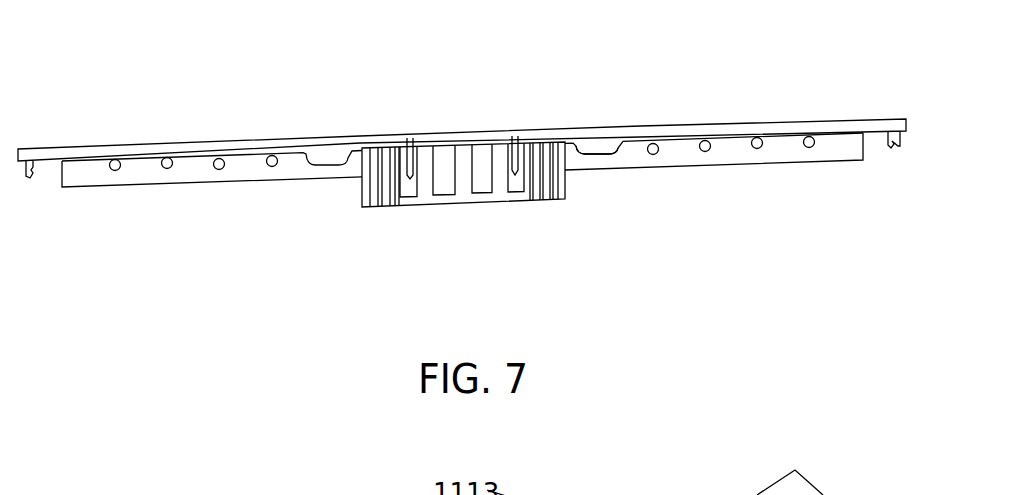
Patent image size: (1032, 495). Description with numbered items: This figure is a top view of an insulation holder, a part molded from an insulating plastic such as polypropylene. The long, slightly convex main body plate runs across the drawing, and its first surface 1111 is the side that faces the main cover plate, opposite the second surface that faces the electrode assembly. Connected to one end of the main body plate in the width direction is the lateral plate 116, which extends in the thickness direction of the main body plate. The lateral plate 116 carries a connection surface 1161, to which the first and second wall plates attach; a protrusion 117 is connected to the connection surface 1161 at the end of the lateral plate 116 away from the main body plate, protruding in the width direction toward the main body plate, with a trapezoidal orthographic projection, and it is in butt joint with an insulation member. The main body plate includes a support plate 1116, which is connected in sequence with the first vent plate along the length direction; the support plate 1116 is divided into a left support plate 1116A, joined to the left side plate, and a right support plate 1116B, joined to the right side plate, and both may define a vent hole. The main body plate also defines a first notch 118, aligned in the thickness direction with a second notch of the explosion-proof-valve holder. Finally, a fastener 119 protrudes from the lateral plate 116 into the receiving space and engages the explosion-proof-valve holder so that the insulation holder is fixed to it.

The lateral plate 116 is at (770, 124).
The protrusion 117 is at (598, 147).
The first notch 118 is at (508, 150).
The fastener 119 is at (409, 162).
The support plate 1116 is at (501, 200).
The left support plate 1116A is at (245, 172).
The right support plate 1116B is at (746, 193).
The connection surface 1161 is at (695, 160).
The first surface 1111 is at (841, 166).